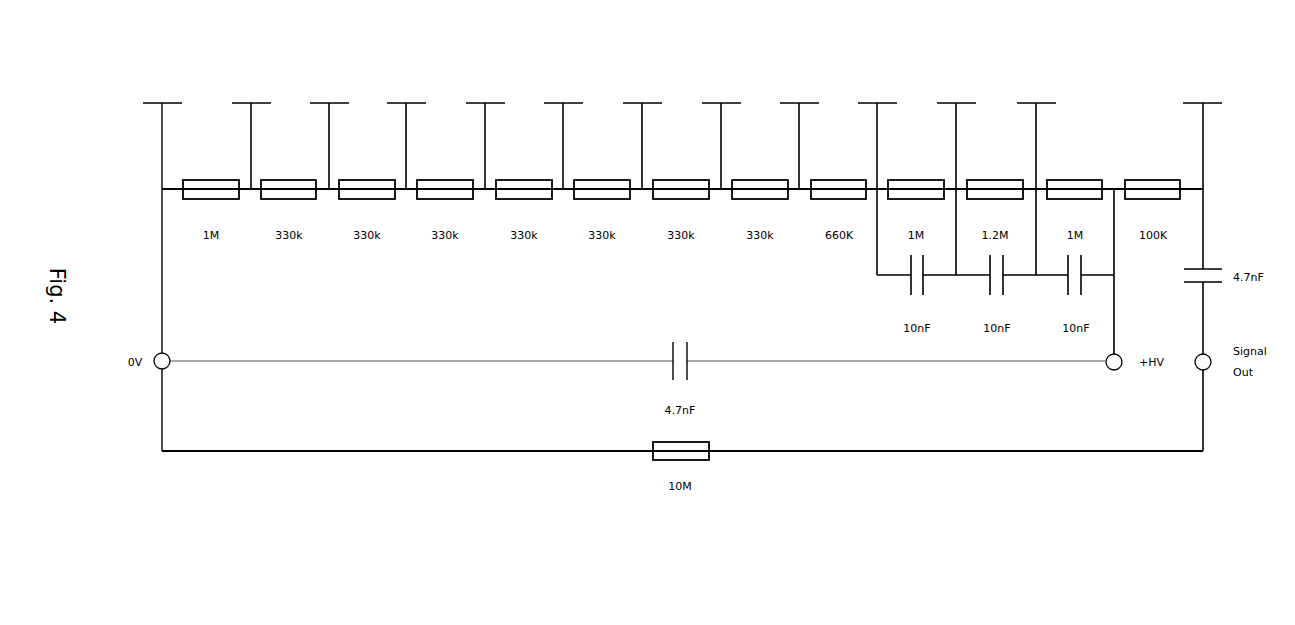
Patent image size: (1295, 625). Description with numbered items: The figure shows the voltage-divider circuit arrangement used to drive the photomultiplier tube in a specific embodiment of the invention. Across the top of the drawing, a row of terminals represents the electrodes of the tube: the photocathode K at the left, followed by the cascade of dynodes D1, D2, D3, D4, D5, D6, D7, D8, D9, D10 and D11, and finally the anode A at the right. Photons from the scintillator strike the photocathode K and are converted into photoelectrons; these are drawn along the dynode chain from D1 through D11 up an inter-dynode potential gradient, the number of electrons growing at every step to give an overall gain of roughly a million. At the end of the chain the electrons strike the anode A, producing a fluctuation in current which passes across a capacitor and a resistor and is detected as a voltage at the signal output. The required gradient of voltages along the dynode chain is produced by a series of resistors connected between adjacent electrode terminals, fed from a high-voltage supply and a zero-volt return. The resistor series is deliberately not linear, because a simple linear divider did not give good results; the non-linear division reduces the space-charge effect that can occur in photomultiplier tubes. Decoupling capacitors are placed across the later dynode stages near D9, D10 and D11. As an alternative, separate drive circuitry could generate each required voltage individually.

The photocathode K is at (162, 92).
The dynode D1 is at (251, 135).
The dynode D2 is at (329, 135).
The dynode D3 is at (406, 135).
The dynode D4 is at (485, 135).
The dynode D5 is at (563, 135).
The dynode D6 is at (642, 135).
The dynode D7 is at (721, 135).
The dynode D8 is at (799, 135).
The dynode D9 is at (877, 178).
The dynode D10 is at (956, 178).
The dynode D11 is at (1036, 178).
The anode A is at (1202, 92).